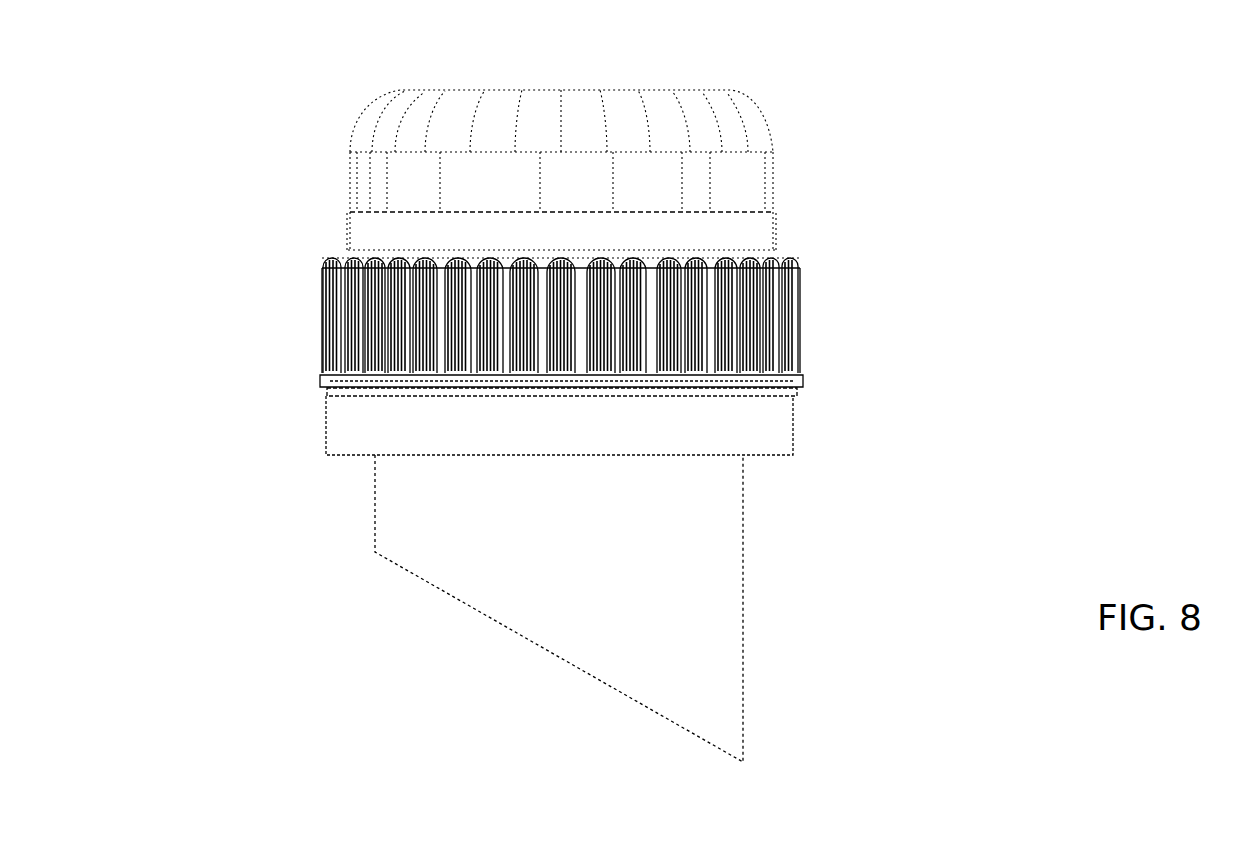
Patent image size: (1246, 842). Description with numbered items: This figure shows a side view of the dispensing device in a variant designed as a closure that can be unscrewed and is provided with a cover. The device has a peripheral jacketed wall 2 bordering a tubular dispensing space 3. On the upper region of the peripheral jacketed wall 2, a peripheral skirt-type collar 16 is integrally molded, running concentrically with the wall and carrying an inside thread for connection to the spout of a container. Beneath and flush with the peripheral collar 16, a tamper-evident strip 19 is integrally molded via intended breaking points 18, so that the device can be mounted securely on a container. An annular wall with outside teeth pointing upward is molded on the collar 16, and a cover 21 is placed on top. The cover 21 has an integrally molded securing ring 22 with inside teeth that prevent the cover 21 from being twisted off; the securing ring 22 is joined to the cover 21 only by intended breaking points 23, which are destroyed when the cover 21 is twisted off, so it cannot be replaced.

The peripheral jacketed wall 2 is at (646, 608).
The dispensing space 3 is at (670, 575).
The peripheral skirt-type collar 16 is at (605, 315).
The intended breaking points 18 is at (687, 393).
The tamper-evident strip 19 is at (370, 430).
The cover 21 is at (715, 122).
The securing ring 22 is at (760, 225).
The intended breaking points 23 is at (402, 215).